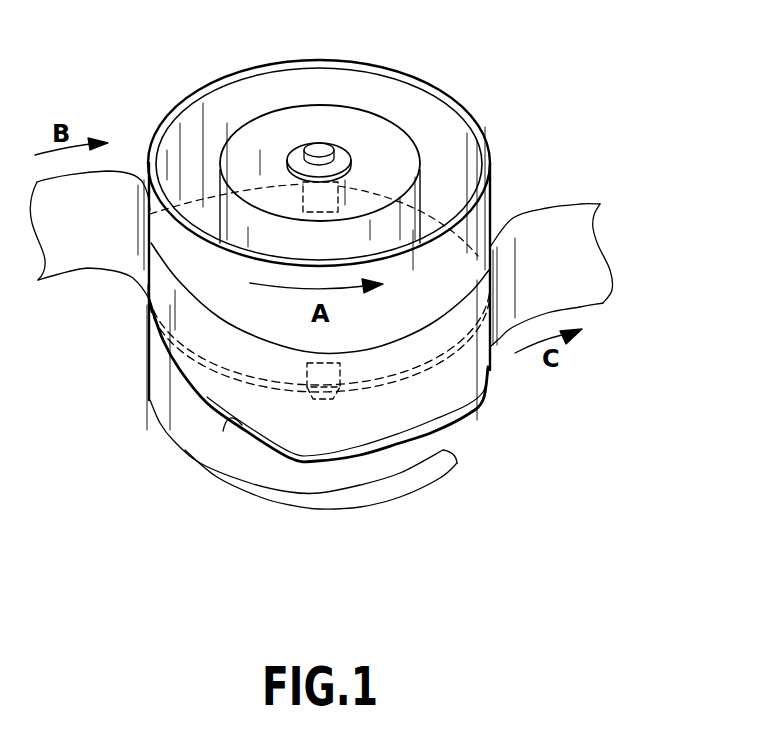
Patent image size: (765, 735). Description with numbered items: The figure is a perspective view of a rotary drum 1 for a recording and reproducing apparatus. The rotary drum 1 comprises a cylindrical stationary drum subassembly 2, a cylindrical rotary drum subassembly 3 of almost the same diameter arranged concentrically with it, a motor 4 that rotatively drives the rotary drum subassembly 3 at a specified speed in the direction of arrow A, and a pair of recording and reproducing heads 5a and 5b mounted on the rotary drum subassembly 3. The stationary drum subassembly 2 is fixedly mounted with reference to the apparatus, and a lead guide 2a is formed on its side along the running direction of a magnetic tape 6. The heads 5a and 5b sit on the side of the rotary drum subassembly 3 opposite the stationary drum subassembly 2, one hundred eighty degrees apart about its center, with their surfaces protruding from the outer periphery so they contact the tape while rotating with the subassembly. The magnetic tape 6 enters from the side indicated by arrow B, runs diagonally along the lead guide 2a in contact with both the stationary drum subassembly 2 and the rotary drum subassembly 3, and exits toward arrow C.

The rotary drum 1 is at (501, 106).
The stationary drum subassembly 2 is at (456, 435).
The lead guide 2a is at (228, 414).
The rotary drum subassembly 3 is at (483, 205).
The motor 4 is at (265, 493).
The recording and reproducing head 5a is at (327, 400).
The recording and reproducing head 5b is at (333, 198).
The magnetic tape 6 is at (588, 237).